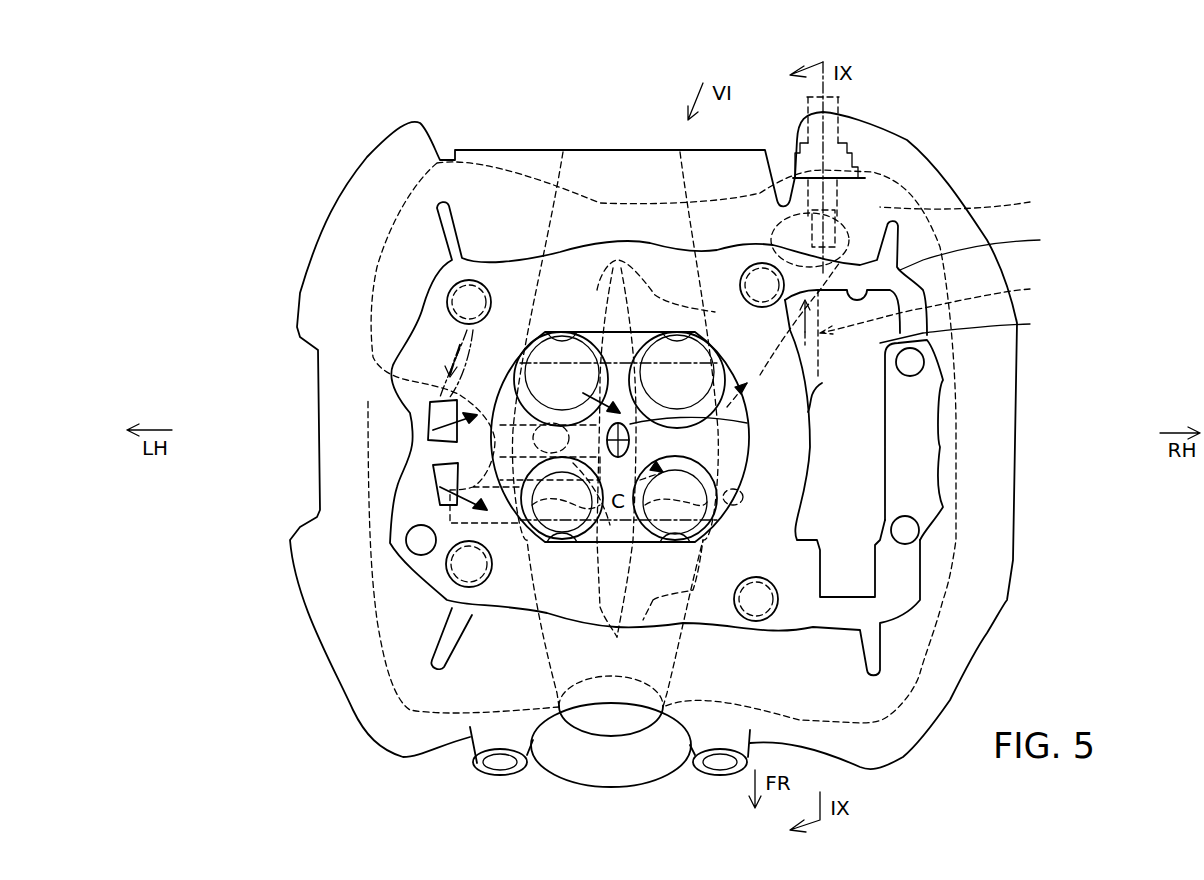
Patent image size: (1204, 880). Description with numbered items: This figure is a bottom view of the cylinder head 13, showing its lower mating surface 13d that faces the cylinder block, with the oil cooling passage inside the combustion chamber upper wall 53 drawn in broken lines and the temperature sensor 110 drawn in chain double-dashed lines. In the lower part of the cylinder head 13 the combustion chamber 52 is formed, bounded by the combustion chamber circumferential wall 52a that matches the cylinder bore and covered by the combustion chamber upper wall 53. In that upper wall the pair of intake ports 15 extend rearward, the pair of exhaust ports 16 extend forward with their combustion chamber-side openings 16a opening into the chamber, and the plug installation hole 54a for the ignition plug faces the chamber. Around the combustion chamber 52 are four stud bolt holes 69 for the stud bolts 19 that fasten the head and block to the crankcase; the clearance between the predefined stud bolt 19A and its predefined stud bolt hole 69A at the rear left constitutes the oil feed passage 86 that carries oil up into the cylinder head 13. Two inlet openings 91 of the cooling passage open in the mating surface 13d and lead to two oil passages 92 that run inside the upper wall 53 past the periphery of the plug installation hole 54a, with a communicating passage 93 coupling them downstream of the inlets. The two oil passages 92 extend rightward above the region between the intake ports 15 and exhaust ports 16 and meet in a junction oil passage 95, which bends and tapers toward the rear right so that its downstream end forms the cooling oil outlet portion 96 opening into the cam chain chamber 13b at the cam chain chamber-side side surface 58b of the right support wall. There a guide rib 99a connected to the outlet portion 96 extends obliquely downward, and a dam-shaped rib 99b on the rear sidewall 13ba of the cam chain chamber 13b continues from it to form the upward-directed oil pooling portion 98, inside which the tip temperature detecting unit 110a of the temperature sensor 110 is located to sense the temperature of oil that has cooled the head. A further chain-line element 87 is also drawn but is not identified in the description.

The cylinder head 13 is at (995, 172).
The cam chain chamber 13b is at (869, 500).
The rear sidewall of the cam chain chamber 13ba is at (1040, 240).
The mating surface 13d is at (775, 561).
The intake ports 15 is at (634, 252).
The exhaust ports 16 is at (623, 628).
The combustion chamber-side openings 16a is at (650, 497).
The stud bolts 19 is at (740, 617).
The predefined stud bolt 19A is at (483, 290).
The combustion chamber 52 is at (640, 452).
The combustion chamber circumferential wall 52a is at (723, 503).
The combustion chamber upper wall 53 is at (706, 452).
The plug installation hole 54a is at (747, 423).
The cam chain chamber-side side surface 58b is at (822, 383).
The stud bolt holes 69 is at (773, 613).
The predefined stud bolt hole 69A is at (480, 303).
The oil feed passage 86 is at (440, 288).
The cooling water passage 87 is at (505, 412).
The inlet openings 91 is at (430, 487).
The oil passages 92 is at (575, 540).
The communicating passage 93 is at (550, 451).
The junction oil passage 95 is at (723, 503).
The cooling oil outlet portion 96 is at (1030, 289).
The oil pooling portion 98 is at (798, 243).
The guide rib 99a is at (1030, 324).
The dam-shaped rib 99b is at (1030, 202).
The temperature sensor 110 is at (840, 128).
The tip temperature detecting unit 110a is at (817, 300).